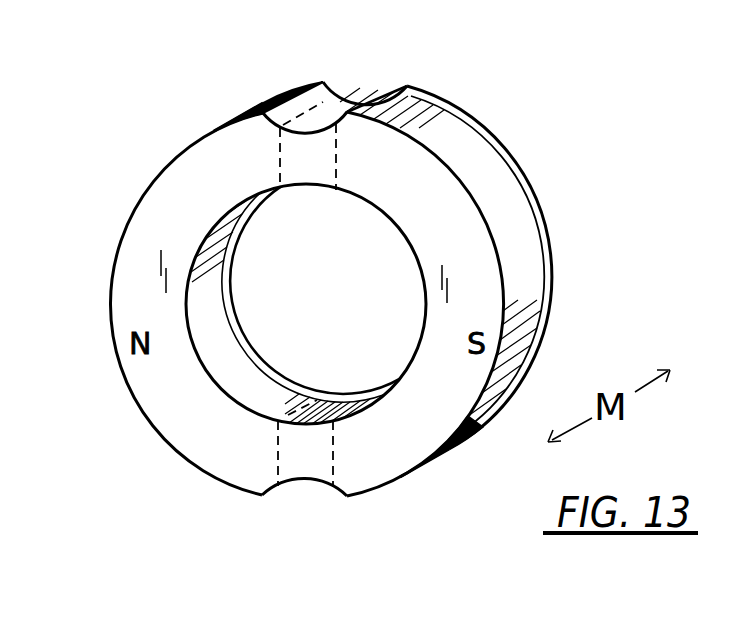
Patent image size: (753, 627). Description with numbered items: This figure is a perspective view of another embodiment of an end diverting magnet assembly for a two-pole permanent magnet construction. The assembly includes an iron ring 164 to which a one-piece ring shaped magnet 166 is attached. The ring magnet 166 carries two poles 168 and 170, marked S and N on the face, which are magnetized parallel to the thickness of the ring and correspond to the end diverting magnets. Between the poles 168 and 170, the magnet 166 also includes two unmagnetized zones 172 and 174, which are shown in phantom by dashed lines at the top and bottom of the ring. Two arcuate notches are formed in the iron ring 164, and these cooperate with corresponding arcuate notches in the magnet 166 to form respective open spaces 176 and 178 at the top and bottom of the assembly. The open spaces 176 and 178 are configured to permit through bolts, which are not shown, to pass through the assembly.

The iron ring 164 is at (552, 233).
The ring shaped magnet 166 is at (507, 348).
The pole 168 is at (463, 269).
The pole 170 is at (158, 235).
The unmagnetized zone 172 is at (338, 157).
The unmagnetized zone 174 is at (337, 460).
The open space 176 is at (371, 85).
The open space 178 is at (311, 491).